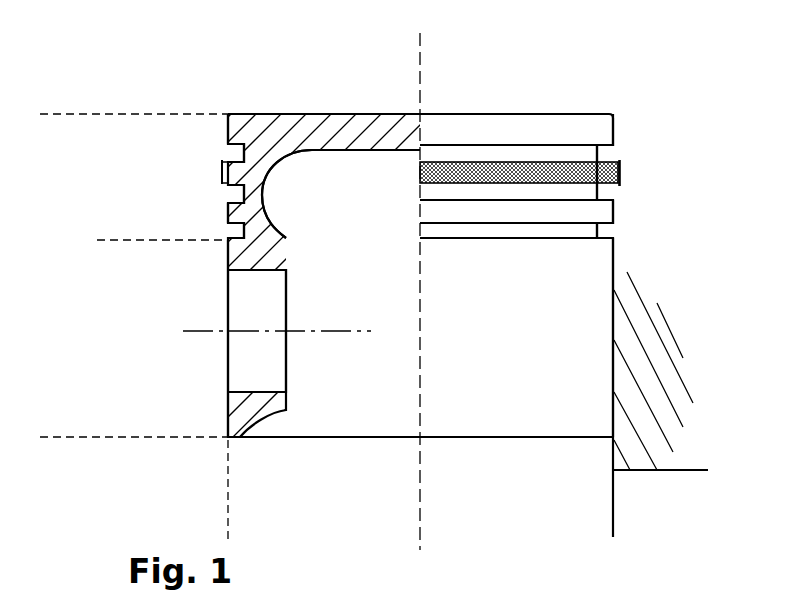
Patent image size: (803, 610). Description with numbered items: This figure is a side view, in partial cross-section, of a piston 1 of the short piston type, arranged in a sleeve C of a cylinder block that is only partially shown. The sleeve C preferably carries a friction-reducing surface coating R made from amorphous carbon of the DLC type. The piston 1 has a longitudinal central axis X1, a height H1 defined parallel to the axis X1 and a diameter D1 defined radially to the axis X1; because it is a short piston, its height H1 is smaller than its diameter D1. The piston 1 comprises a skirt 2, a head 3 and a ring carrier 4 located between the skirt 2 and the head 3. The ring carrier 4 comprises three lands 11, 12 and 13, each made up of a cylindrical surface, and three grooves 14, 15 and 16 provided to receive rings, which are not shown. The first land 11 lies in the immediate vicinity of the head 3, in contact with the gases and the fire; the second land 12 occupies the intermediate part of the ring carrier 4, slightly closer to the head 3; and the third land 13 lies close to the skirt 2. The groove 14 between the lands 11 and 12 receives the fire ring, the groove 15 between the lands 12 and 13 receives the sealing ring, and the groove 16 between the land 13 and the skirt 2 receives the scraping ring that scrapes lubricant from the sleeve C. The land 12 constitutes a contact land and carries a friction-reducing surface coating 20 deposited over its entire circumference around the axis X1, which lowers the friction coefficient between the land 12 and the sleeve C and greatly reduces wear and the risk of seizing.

The piston 1 is at (224, 70).
The skirt 2 is at (140, 240).
The head 3 is at (326, 136).
The ring carrier 4 is at (140, 114).
The first land 11 is at (231, 126).
The second land 12 is at (226, 166).
The third land 13 is at (236, 214).
The groove 14 is at (616, 150).
The groove 15 is at (626, 196).
The groove 16 is at (622, 236).
The friction-reducing surface coating 20 is at (222, 176).
The height H1 is at (61, 118).
The diameter D1 is at (232, 515).
The longitudinal central axis X1 is at (417, 275).
The friction-reducing surface coating R is at (606, 366).
The sleeve C is at (648, 462).